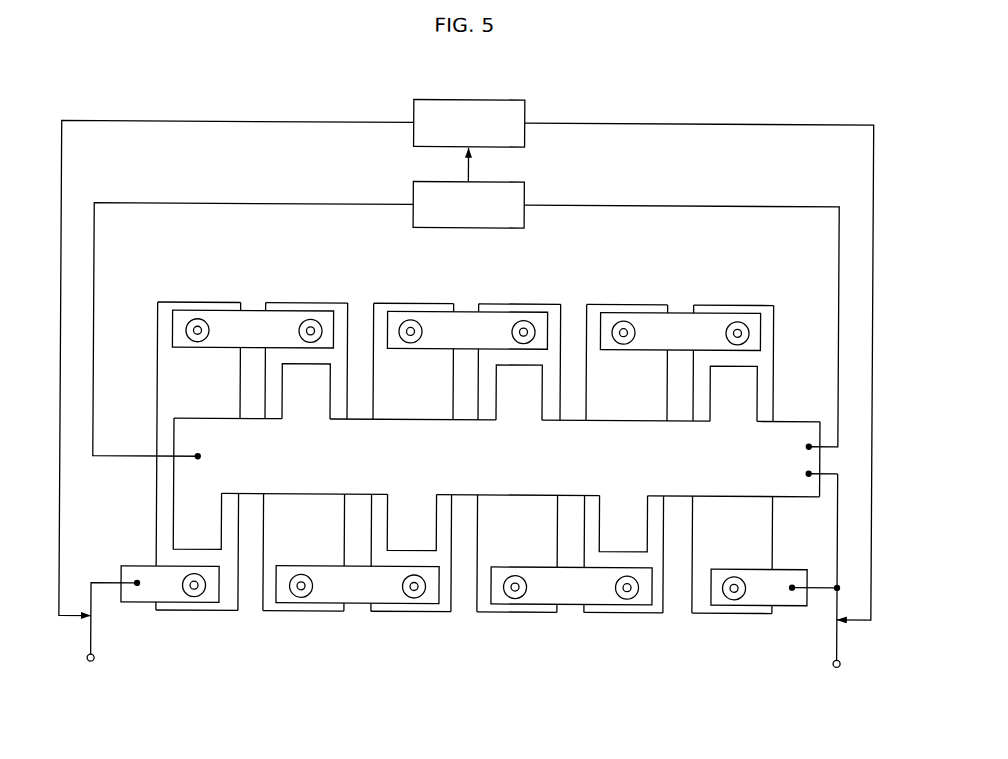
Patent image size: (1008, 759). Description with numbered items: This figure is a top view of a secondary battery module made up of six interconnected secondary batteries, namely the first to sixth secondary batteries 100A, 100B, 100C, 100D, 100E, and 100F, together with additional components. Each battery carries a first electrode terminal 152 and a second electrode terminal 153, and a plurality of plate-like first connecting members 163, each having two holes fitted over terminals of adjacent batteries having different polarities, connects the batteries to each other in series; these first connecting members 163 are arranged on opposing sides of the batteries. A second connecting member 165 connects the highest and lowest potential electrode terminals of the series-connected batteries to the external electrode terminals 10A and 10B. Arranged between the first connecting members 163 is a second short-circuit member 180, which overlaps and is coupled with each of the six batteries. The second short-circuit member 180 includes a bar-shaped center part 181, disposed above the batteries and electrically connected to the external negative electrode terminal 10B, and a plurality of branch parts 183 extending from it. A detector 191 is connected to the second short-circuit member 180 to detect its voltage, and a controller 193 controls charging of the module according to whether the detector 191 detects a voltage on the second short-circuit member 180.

The second short-circuit member 180 is at (172, 416).
The center part 181 is at (805, 426).
The branch parts 183 is at (328, 370).
The first connecting member 163 is at (255, 320).
The second connecting member 165 is at (135, 597).
The second electrode terminal 153 is at (196, 318).
The first electrode terminal 152 is at (310, 318).
The first secondary battery 100A is at (179, 613).
The second secondary battery 100B is at (312, 613).
The third secondary battery 100C is at (402, 613).
The fourth secondary battery 100D is at (525, 613).
The fifth secondary battery 100E is at (614, 613).
The sixth secondary battery 100F is at (748, 613).
The detector 191 is at (533, 168).
The controller 193 is at (467, 96).
The external electrode terminal 10A is at (92, 662).
The external negative electrode terminal 10B is at (838, 664).